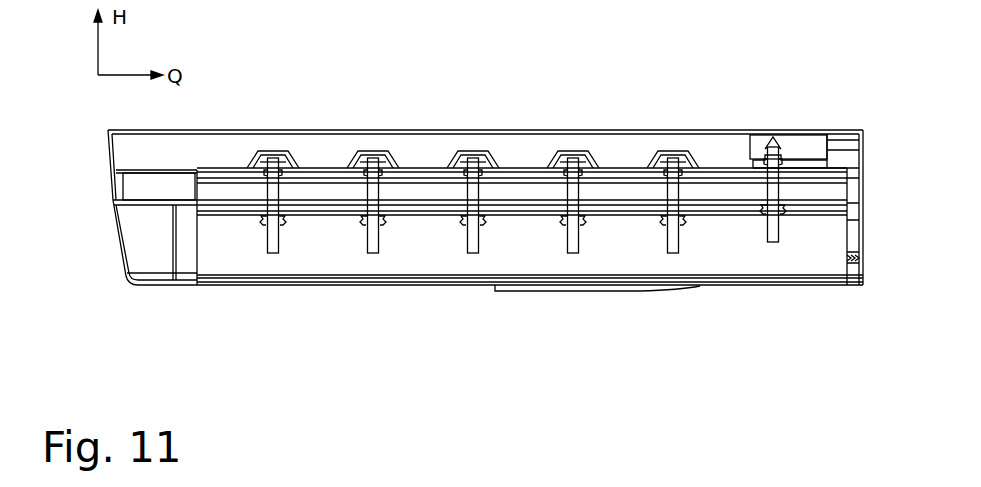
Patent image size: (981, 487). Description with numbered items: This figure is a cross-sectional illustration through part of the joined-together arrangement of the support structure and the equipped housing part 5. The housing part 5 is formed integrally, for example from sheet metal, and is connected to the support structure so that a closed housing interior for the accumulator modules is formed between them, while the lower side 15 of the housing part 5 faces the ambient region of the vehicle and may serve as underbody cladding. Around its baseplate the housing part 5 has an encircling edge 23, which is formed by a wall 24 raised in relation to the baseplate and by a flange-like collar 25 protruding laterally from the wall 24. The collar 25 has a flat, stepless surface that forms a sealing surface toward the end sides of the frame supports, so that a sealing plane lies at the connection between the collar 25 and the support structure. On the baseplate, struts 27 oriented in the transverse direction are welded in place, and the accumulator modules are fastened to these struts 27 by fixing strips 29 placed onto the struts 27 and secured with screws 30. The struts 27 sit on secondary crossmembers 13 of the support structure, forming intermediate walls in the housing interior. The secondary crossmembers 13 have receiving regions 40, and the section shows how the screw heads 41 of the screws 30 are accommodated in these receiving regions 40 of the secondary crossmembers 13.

The housing part 5 is at (432, 287).
The secondary crossmember 13 is at (440, 147).
The lower side of the housing part 15 is at (478, 285).
The edge 23 is at (104, 242).
The wall 24 is at (138, 255).
The collar 25 is at (110, 198).
The strut 27 is at (815, 256).
The fixing strip 29 is at (830, 193).
The screw 30 is at (270, 244).
The receiving region 40 is at (261, 153).
The screw head 41 is at (296, 165).